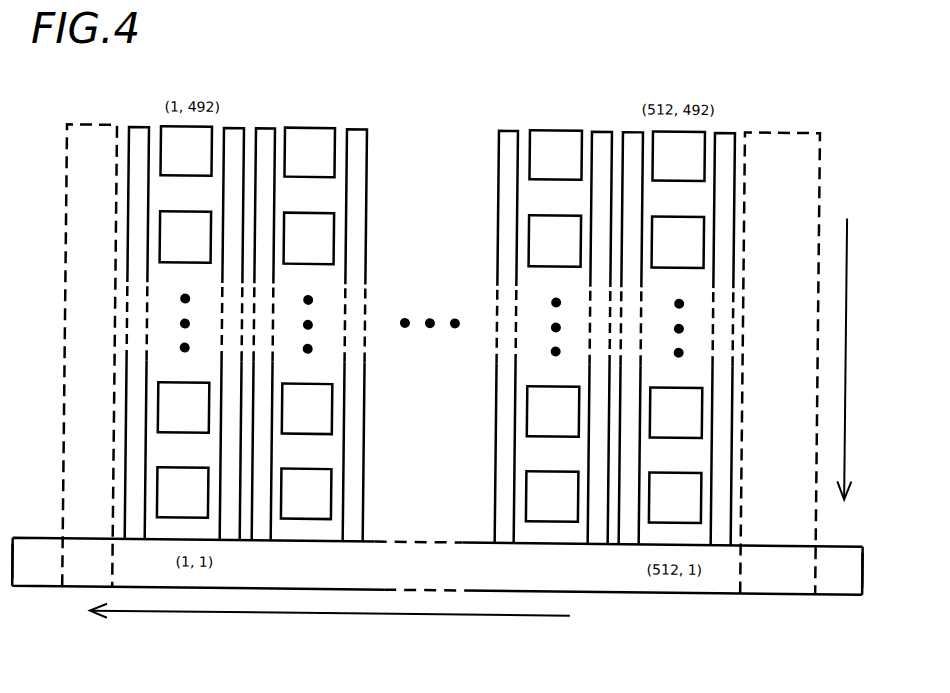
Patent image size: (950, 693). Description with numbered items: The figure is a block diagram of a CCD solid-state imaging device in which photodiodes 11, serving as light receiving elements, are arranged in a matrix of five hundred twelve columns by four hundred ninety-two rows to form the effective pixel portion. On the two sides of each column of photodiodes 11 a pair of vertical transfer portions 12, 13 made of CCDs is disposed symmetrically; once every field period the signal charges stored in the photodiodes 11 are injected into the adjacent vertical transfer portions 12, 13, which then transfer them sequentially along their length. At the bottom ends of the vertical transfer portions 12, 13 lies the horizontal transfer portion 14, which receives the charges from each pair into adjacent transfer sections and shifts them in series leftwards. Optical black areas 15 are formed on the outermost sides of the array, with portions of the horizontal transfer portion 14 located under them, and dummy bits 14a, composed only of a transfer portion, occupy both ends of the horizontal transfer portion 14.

The photodiode 11 is at (310, 137).
The vertical transfer portion 12 is at (137, 126).
The vertical transfer portion 13 is at (232, 126).
The horizontal transfer portion 14 is at (371, 549).
The dummy bit 14a is at (44, 552).
The optical black area 15 is at (89, 123).